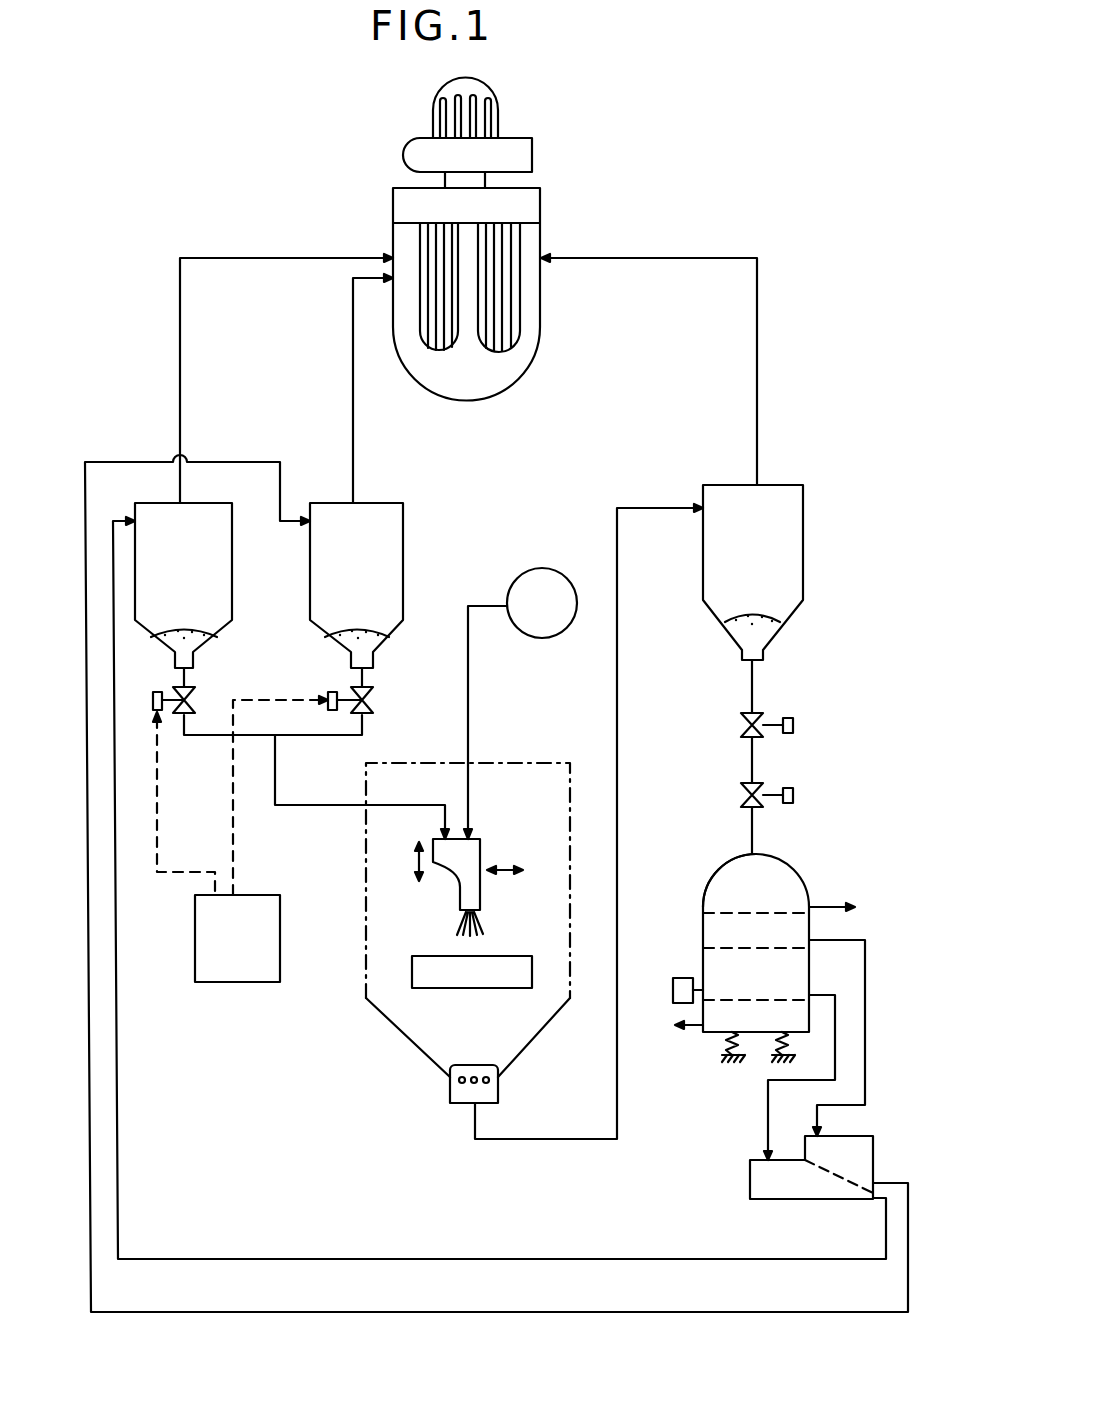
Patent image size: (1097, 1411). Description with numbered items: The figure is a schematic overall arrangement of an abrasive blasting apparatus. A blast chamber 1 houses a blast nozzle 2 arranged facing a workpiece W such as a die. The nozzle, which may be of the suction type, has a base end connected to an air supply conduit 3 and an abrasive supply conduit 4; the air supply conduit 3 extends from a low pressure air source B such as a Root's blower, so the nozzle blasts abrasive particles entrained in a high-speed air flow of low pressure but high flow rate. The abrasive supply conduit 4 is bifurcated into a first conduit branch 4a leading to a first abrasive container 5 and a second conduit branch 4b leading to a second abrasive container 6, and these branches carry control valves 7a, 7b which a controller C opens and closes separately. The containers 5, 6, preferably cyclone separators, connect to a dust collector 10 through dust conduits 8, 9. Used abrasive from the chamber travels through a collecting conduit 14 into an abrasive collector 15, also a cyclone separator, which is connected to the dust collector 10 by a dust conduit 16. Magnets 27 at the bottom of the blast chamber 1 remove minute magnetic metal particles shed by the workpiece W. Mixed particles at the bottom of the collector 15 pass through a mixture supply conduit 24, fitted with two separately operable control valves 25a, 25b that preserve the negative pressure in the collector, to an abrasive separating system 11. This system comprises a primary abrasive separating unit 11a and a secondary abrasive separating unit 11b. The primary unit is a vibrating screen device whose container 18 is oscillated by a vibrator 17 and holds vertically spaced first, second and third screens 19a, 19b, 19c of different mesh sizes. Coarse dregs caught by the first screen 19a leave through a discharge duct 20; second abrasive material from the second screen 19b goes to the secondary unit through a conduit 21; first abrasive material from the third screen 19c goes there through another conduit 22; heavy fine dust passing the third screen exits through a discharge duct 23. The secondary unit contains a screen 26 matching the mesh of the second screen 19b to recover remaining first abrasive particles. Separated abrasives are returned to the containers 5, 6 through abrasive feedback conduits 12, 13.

The blast chamber 1 is at (512, 762).
The blast nozzle 2 is at (481, 852).
The air supply conduit 3 is at (468, 700).
The abrasive supply conduit 4 is at (322, 803).
The first conduit branch 4a is at (208, 738).
The second conduit branch 4b is at (345, 736).
The first abrasive container 5 is at (232, 570).
The second abrasive container 6 is at (403, 558).
The control valve 7a is at (197, 697).
The control valve 7b is at (375, 697).
The dust conduit 8 is at (183, 352).
The dust conduit 9 is at (356, 420).
The dust collector 10 is at (552, 182).
The abrasive separating system 11 is at (811, 824).
The primary abrasive separating unit 11a is at (718, 868).
The secondary abrasive separating unit 11b is at (868, 1135).
The abrasive feedback conduit 12 is at (512, 1258).
The abrasive feedback conduit 13 is at (478, 1314).
The collecting conduit 14 is at (617, 730).
The abrasive collector 15 is at (803, 538).
The dust conduit 16 is at (760, 352).
The vibrator 17 is at (672, 980).
The container 18 is at (796, 874).
The first screen 19a is at (752, 906).
The second screen 19b is at (745, 945).
The third screen 19c is at (737, 1000).
The discharge duct 20 is at (835, 903).
The conduit 21 is at (866, 985).
The conduit 22 is at (836, 1055).
The discharge duct 23 is at (697, 1032).
The mixture supply conduit 24 is at (755, 680).
The control valve 25a is at (740, 722).
The control valve 25b is at (740, 795).
The screen 26 is at (848, 1172).
The magnets 27 is at (477, 1065).
The low pressure air source B is at (548, 568).
The controller C is at (247, 982).
The workpiece W is at (512, 956).